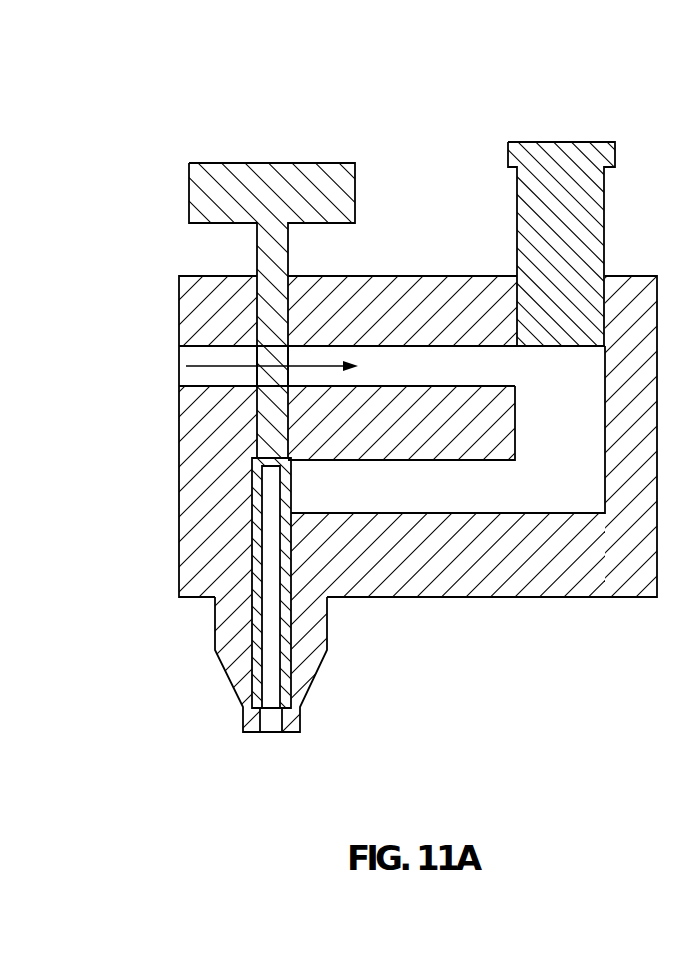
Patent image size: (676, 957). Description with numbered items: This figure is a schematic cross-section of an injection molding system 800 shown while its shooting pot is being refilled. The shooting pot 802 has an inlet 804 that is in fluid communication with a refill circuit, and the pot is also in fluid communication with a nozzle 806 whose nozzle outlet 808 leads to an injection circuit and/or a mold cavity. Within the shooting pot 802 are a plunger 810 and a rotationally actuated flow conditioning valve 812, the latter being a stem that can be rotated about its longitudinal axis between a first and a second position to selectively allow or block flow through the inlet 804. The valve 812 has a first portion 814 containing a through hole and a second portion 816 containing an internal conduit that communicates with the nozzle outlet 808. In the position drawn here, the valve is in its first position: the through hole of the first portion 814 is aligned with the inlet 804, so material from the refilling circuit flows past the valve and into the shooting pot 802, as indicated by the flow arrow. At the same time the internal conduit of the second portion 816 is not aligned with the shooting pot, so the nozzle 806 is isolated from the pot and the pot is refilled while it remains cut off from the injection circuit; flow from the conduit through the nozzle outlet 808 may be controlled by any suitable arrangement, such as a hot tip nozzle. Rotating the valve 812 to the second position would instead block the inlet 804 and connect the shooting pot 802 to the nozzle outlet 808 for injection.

The injection molding system 800 is at (184, 122).
The shooting pot 802 is at (558, 480).
The inlet 804 is at (178, 367).
The nozzle 806 is at (328, 652).
The nozzle outlet 808 is at (275, 722).
The plunger 810 is at (508, 152).
The rotationally actuated flow conditioning valve 812 is at (189, 197).
The first portion 814 is at (270, 357).
The second portion 816 is at (272, 487).